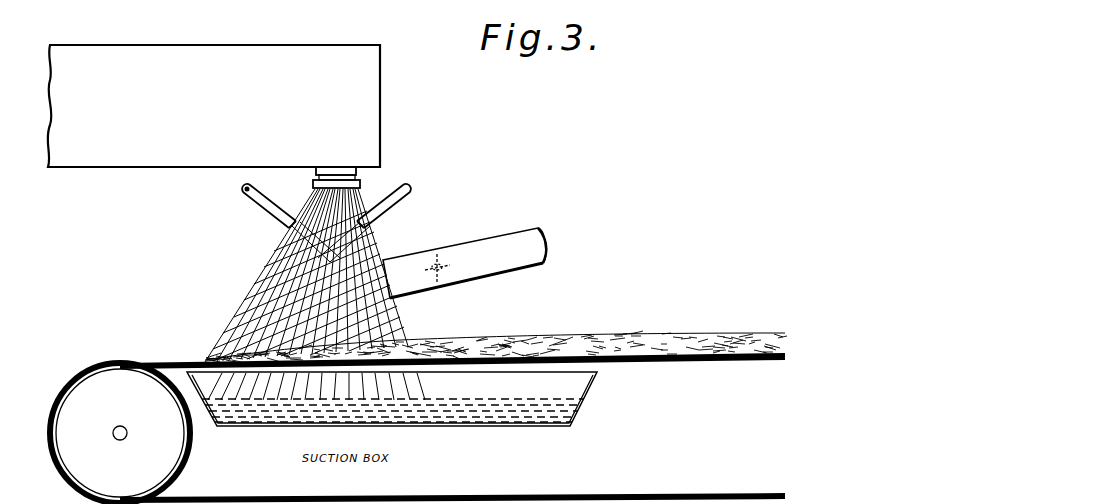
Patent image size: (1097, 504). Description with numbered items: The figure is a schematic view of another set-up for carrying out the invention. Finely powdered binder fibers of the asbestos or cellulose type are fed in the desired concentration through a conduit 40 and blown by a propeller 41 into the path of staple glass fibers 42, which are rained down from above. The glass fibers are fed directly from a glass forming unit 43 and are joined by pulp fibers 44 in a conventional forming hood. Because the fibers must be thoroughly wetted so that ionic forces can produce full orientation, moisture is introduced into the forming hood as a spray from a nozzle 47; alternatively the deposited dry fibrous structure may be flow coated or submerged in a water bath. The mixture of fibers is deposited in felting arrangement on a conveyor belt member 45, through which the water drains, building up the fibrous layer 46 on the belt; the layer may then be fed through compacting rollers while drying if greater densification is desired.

The conduit 40 is at (513, 232).
The propeller 41 is at (446, 274).
The staple glass fibers 42 is at (268, 268).
The glass forming unit 43 is at (358, 172).
The pulp fibers 44 is at (390, 306).
The conveyor belt member 45 is at (310, 365).
The fiber layer 46 is at (588, 340).
The nozzle 47 is at (260, 205).